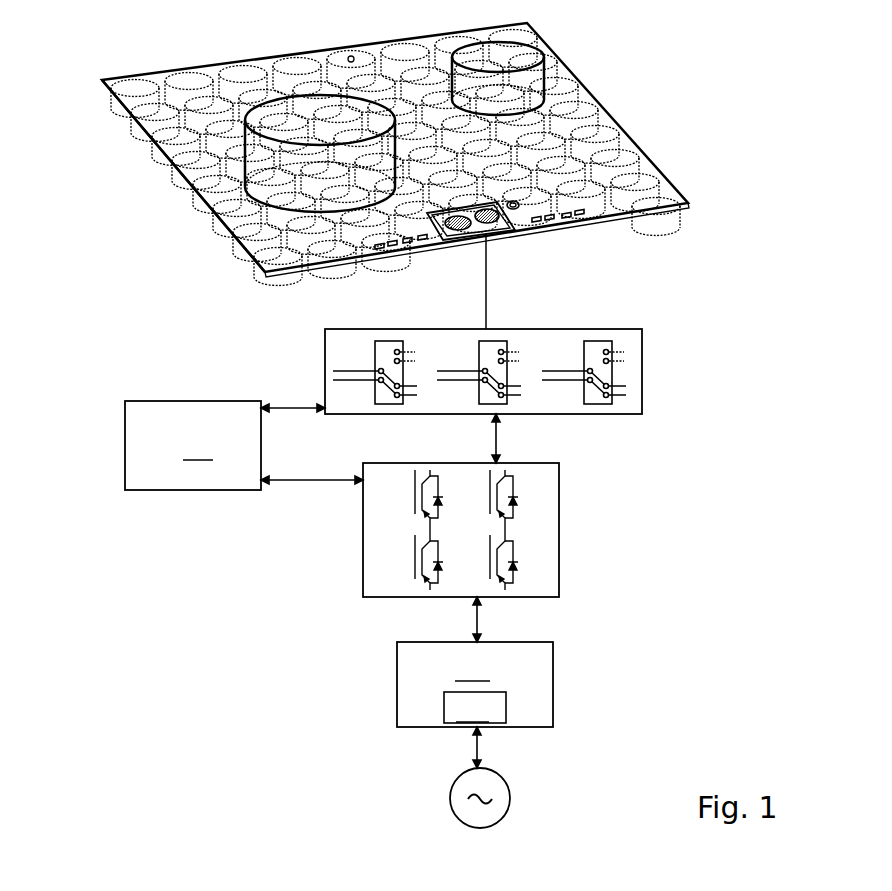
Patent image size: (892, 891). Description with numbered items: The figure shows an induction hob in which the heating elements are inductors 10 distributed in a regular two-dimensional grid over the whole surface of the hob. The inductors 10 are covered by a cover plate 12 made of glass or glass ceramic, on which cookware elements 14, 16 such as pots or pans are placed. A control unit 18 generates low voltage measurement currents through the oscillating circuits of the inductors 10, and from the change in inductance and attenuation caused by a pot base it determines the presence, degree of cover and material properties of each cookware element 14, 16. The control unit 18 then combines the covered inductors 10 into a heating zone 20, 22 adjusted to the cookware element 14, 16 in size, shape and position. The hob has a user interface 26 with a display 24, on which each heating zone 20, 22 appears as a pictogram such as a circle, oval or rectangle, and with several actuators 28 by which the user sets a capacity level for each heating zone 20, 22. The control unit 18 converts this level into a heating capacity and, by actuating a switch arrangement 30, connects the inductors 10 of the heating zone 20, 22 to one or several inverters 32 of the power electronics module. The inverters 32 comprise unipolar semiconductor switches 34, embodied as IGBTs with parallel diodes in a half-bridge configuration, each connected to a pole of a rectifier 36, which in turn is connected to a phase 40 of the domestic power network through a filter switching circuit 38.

The inductors 10 is at (585, 90).
The cover plate 12 is at (238, 247).
The cookware element 14 is at (295, 97).
The cookware element 16 is at (462, 53).
The control unit 18 is at (193, 445).
The heating zone 20 is at (198, 190).
The heating zone 22 is at (570, 108).
The display 24 is at (498, 209).
The user interface 26 is at (527, 228).
The actuators 28 is at (422, 247).
The switch arrangement 30 is at (563, 360).
The inverters 32 is at (522, 492).
The semiconductor switches 34 is at (515, 543).
The rectifier 36 is at (475, 684).
The filter switching circuit 38 is at (475, 708).
The phase 40 is at (492, 787).